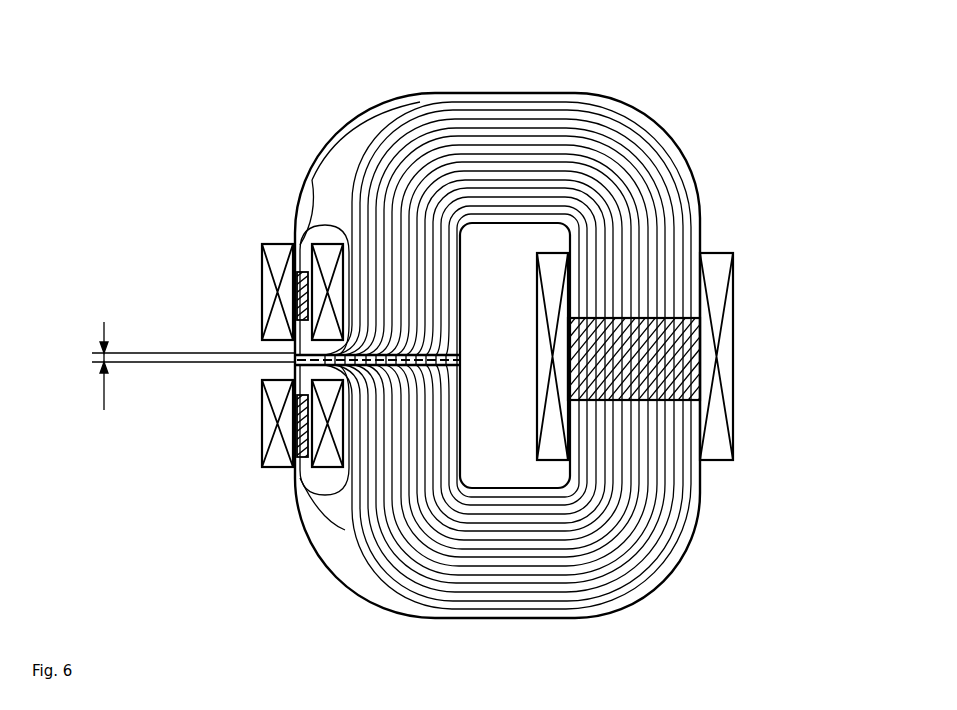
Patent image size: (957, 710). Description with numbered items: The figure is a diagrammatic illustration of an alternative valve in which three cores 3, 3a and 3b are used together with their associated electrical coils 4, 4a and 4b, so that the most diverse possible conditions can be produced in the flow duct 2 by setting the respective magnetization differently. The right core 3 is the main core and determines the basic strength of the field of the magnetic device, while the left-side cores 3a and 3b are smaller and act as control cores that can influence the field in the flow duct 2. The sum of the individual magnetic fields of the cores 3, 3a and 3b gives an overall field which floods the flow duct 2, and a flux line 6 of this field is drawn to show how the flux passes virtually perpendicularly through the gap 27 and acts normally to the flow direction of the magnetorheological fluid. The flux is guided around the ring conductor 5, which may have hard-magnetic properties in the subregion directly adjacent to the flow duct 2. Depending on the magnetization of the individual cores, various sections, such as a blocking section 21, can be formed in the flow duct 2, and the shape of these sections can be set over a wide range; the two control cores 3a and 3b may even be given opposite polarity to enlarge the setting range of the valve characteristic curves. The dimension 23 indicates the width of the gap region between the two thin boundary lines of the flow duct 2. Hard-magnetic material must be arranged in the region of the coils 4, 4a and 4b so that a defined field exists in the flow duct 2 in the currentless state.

The flow duct 2 is at (292, 370).
The core 3 is at (700, 316).
The core 3a is at (298, 270).
The core 3b is at (296, 470).
The electrical coil 4 is at (722, 340).
The electrical coil 4a is at (262, 282).
The electrical coil 4b is at (265, 425).
The ring conductor 5 is at (583, 618).
The flux line 6 is at (600, 150).
The blocking section 21 is at (460, 357).
The gap width 23 is at (95, 370).
The gap 27 is at (290, 352).